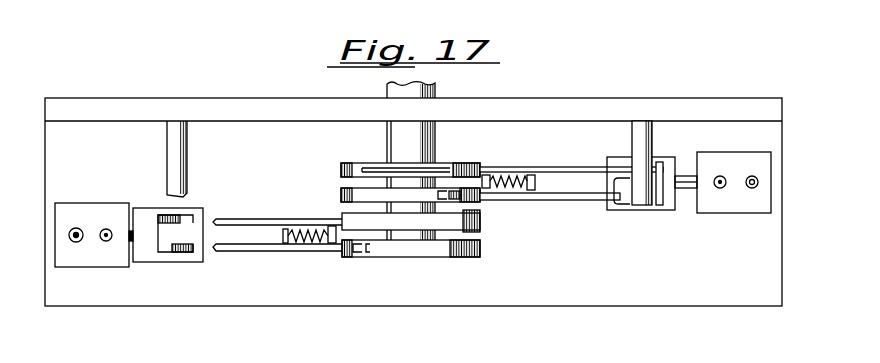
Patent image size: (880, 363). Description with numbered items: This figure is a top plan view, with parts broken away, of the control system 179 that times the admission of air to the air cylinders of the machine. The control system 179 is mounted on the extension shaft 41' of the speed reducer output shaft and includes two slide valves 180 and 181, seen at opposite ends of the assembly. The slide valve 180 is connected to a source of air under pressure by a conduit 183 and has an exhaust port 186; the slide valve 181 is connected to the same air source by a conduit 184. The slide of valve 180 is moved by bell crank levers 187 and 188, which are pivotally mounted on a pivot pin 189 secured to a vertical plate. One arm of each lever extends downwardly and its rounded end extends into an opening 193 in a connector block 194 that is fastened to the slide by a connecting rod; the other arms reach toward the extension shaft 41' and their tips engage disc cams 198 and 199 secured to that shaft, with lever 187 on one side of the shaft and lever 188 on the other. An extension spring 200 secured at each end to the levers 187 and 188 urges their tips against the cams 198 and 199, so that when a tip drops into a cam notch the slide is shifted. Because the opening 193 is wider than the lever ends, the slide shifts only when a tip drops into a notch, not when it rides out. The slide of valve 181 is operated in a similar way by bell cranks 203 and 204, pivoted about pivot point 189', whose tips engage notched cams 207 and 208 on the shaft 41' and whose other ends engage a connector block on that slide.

The control system 179 is at (538, 97).
The extension shaft 41' is at (433, 162).
The pivot point 189' is at (210, 159).
The pivot pin 189 is at (666, 137).
The disc cam 199 is at (448, 162).
The disc cam 198 is at (478, 200).
The notched cam 208 is at (342, 216).
The notched cam 207 is at (145, 262).
The bell crank 204 is at (262, 204).
The bell crank 203 is at (229, 252).
The bell crank lever 188 is at (555, 165).
The bell crank lever 187 is at (567, 200).
The extension spring 200 is at (515, 176).
The connector block 194 is at (667, 212).
The opening 193 is at (620, 189).
The slide valve 180 is at (710, 153).
The exhaust port 186 is at (720, 190).
The conduit 183 is at (752, 190).
The slide valve 181 is at (97, 204).
The conduit 184 is at (77, 243).